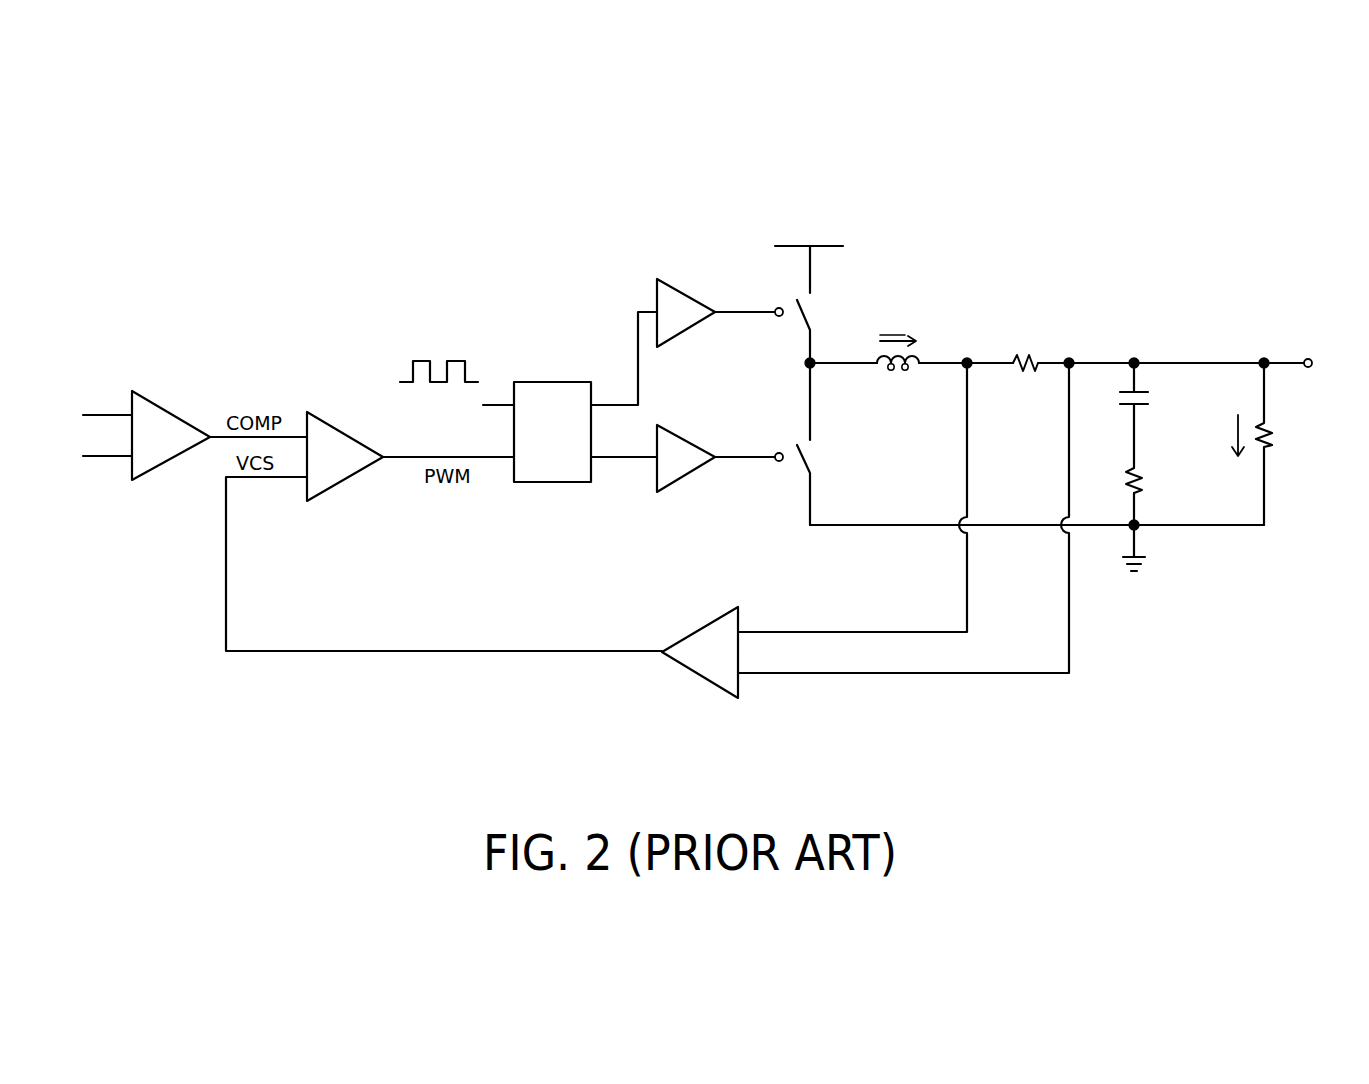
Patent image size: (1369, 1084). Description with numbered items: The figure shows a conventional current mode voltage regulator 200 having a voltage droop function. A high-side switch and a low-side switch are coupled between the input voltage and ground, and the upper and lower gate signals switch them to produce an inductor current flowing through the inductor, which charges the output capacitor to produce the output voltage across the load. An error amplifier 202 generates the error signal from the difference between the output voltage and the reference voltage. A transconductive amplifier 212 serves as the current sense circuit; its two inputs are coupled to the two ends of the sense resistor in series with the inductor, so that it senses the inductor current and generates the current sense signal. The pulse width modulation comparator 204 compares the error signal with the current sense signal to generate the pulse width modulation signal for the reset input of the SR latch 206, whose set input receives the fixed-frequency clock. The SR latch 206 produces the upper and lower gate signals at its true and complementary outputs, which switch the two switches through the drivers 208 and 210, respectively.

The current mode voltage regulator 200 is at (1167, 208).
The error amplifier 202 is at (168, 408).
The pulse width modulation comparator 204 is at (345, 432).
The SR latch 206 is at (552, 380).
The driver 208 is at (689, 293).
The driver 210 is at (686, 437).
The transconductive amplifier 212 is at (700, 628).